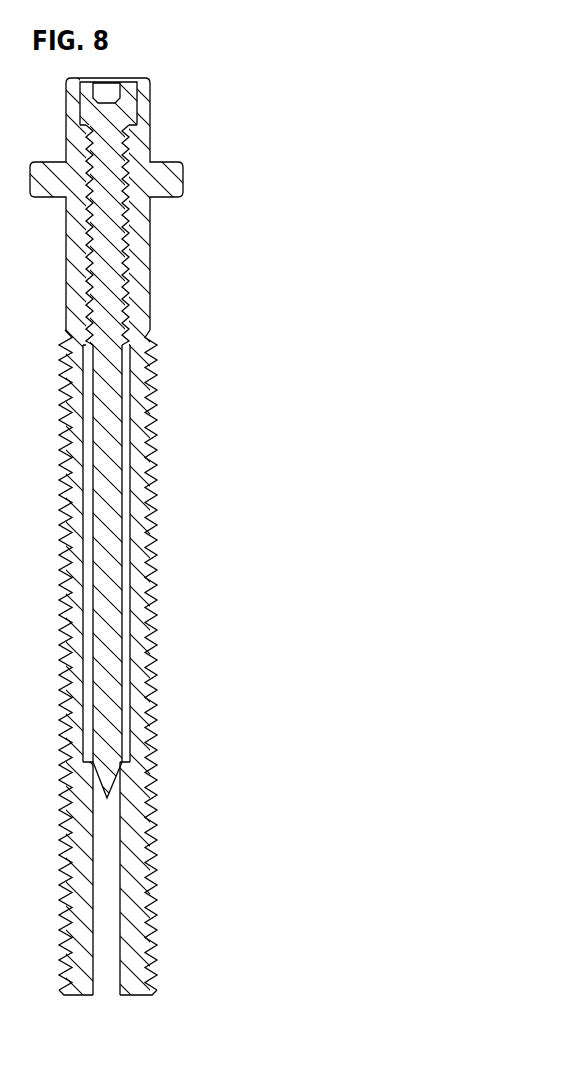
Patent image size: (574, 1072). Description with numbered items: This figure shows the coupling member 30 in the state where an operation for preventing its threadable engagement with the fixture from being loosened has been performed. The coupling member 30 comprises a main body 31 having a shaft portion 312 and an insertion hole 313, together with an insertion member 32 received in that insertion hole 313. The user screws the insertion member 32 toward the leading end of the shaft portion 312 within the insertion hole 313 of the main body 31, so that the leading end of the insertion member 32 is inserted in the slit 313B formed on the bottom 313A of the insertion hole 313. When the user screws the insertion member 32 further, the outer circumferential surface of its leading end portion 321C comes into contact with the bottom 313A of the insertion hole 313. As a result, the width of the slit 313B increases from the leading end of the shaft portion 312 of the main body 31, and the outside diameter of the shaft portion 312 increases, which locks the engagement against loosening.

The coupling member 30 is at (326, 300).
The main body 31 is at (187, 536).
The insertion member 32 is at (187, 497).
The shaft portion 312 is at (158, 972).
The insertion hole 313 is at (113, 550).
The bottom of the insertion hole 313A is at (122, 762).
The slit 313B is at (112, 860).
The leading end portion 321C is at (109, 795).